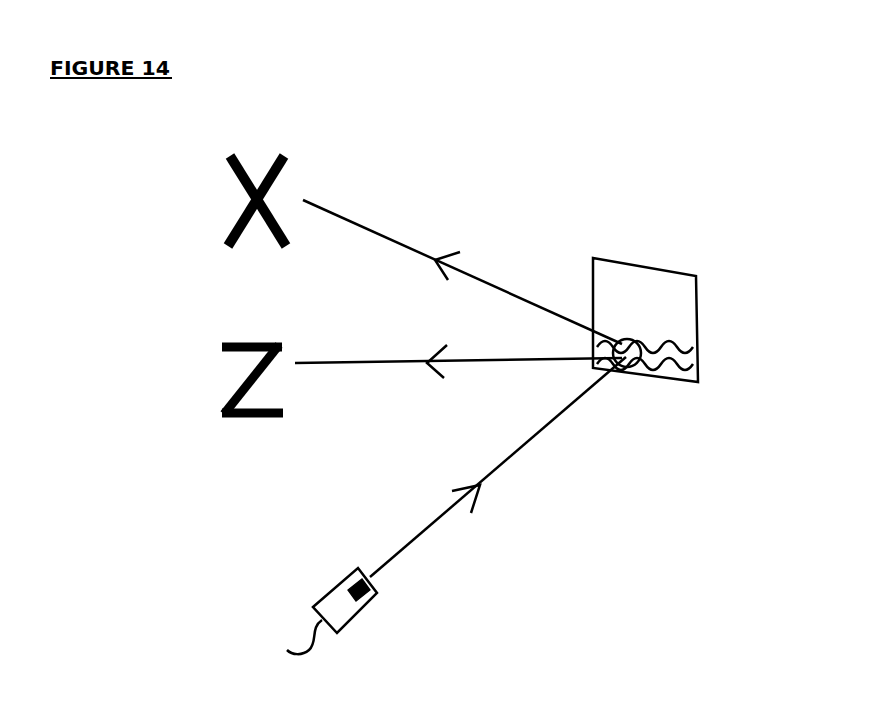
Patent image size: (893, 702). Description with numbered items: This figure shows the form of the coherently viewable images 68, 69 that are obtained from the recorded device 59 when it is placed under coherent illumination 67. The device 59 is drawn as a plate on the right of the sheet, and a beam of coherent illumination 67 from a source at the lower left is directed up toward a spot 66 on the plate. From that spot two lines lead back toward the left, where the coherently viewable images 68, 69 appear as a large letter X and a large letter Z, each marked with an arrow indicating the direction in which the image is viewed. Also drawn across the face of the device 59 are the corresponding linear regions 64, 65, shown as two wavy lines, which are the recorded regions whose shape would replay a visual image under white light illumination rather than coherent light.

The device 59 is at (685, 273).
The linear region 64 is at (694, 372).
The linear region 65 is at (679, 355).
The illuminated spot 66 is at (626, 368).
The coherent illumination 67 is at (456, 505).
The coherently viewable image 68 is at (425, 250).
The coherently viewable image 69 is at (422, 379).